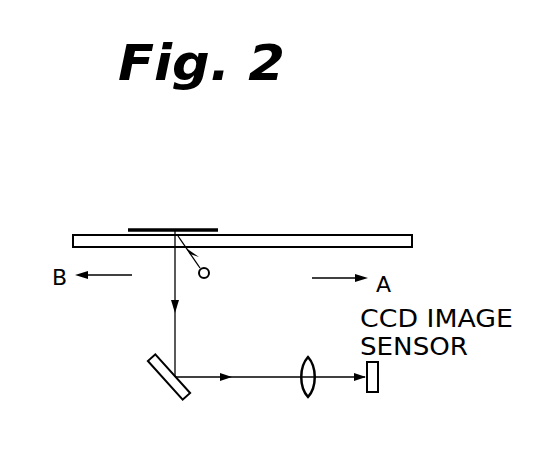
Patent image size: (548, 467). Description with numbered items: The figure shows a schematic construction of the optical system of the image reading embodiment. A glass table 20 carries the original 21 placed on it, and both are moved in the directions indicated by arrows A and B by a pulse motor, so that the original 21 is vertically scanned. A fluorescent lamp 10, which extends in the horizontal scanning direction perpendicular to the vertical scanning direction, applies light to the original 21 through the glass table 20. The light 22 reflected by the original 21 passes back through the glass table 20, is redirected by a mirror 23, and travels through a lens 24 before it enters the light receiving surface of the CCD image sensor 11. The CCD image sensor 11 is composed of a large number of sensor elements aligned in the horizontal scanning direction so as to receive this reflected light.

The glass table 20 is at (308, 236).
The original 21 is at (202, 228).
The fluorescent lamp 10 is at (210, 272).
The light 22 is at (176, 334).
The mirror 23 is at (166, 388).
The lens 24 is at (308, 398).
The CCD image sensor 11 is at (371, 393).